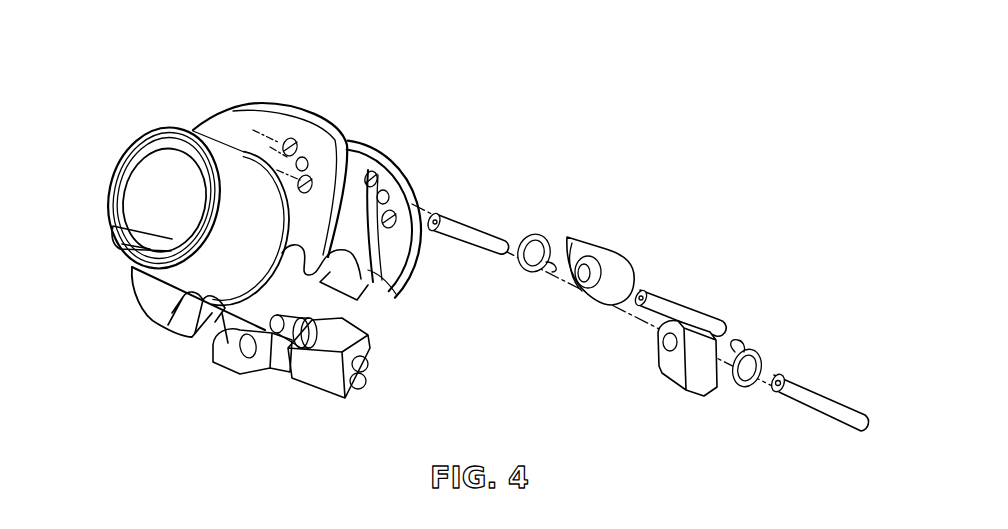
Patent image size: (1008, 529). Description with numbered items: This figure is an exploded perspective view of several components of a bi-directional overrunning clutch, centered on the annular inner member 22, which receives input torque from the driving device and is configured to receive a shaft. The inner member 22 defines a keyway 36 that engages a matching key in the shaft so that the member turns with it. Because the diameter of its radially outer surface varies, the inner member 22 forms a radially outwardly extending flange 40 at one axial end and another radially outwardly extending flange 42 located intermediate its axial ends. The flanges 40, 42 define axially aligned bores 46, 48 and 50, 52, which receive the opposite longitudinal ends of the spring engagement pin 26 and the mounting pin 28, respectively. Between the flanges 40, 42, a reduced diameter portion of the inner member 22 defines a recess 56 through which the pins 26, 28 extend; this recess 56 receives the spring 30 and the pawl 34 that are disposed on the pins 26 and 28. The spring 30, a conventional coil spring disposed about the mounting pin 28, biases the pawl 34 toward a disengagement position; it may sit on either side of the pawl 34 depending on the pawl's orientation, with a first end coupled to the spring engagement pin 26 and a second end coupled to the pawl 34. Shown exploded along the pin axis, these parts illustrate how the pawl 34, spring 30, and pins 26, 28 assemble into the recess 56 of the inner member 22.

The inner member 22 is at (139, 86).
The spring engagement pin 26 is at (469, 223).
The mounting pin 28 is at (821, 388).
The spring 30 is at (753, 388).
The pawl 34 is at (675, 359).
The keyway 36 is at (147, 238).
The flange 40 is at (396, 263).
The flange 42 is at (246, 125).
The bore 46 is at (384, 194).
The bore 48 is at (302, 158).
The bore 50 is at (394, 212).
The bore 52 is at (311, 176).
The recess 56 is at (348, 288).